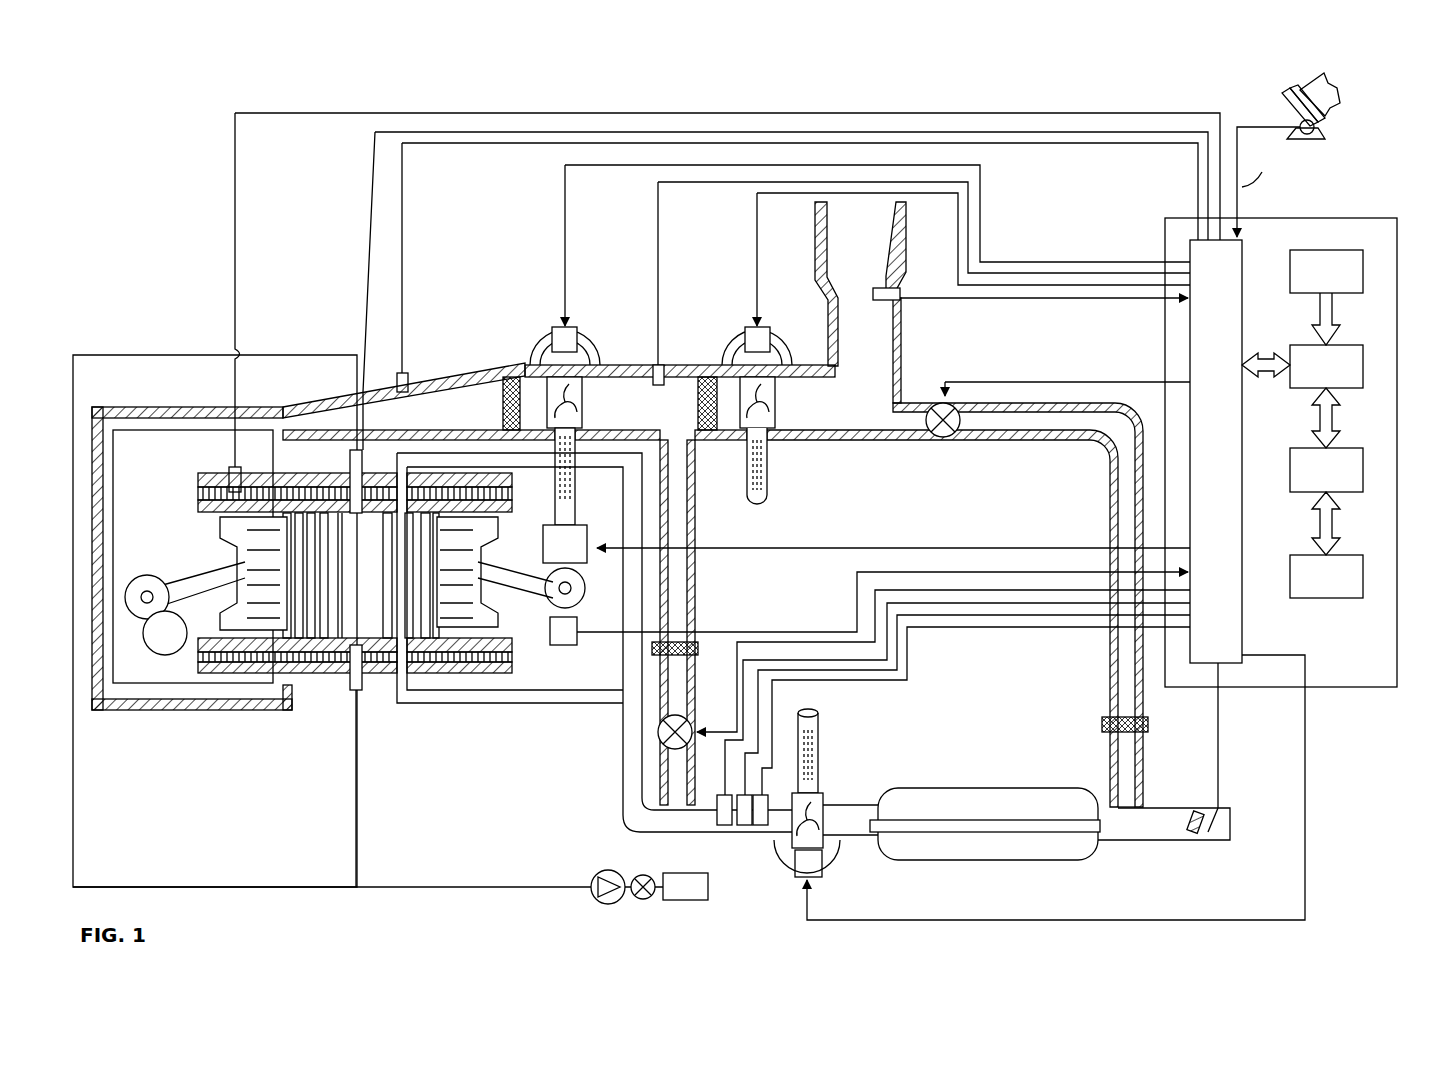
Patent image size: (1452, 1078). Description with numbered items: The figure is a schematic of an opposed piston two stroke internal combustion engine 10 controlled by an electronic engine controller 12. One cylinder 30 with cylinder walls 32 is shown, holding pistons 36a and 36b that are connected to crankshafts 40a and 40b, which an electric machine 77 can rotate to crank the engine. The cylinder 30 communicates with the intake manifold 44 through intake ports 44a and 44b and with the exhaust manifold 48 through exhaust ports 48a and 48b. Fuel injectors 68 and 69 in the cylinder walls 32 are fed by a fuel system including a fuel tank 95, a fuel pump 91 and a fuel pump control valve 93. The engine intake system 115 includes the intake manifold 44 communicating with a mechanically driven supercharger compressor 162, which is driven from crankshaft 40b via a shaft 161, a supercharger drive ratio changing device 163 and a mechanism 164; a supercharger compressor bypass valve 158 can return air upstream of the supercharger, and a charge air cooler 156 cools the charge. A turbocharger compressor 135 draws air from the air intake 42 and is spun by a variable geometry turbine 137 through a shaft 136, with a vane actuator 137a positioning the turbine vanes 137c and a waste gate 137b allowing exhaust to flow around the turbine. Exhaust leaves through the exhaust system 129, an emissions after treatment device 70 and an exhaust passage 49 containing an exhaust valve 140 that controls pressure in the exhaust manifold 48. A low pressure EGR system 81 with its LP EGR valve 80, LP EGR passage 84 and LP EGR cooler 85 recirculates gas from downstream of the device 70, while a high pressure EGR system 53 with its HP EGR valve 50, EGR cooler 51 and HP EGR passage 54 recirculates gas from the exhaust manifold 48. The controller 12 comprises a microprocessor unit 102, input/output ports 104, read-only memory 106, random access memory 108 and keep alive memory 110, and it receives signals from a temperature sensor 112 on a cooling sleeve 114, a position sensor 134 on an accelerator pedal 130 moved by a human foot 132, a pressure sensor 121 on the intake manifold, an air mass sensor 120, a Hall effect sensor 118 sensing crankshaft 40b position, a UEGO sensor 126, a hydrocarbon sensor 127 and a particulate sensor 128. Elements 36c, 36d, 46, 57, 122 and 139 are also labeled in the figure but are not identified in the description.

The opposed piston two stroke internal combustion engine 10 is at (205, 340).
The electronic engine controller 12 is at (1355, 218).
The cylinder 30 is at (345, 592).
The cylinder walls 32 is at (500, 507).
The piston 36a is at (250, 565).
The piston 36b is at (465, 552).
The first sensor 36c is at (345, 490).
The second sensor 36d is at (370, 690).
The crankshaft 40a is at (145, 620).
The crankshaft 40b is at (556, 600).
The air intake 42 is at (860, 284).
The intake manifold 44 is at (463, 536).
The intake port 44a is at (290, 688).
The intake port 44b is at (278, 512).
The intake manifold 46 is at (880, 600).
The exhaust manifold 48 is at (508, 472).
The exhaust port 48a is at (407, 682).
The exhaust port 48b is at (404, 470).
The exhaust passage 49 is at (1222, 802).
The HP EGR valve 50 is at (700, 728).
The EGR cooler 51 is at (698, 650).
The high pressure exhaust gas recirculation system 53 is at (724, 610).
The HP EGR passage 54 is at (693, 535).
The filter 57 is at (705, 376).
The fuel injector 68 is at (362, 458).
The fuel injector 69 is at (349, 708).
The emissions after treatment device 70 is at (925, 861).
The electric machine 77 is at (165, 633).
The LP EGR valve 80 is at (953, 434).
The low pressure exhaust gas recirculation system 81 is at (1032, 356).
The LP EGR passage 84 is at (1113, 672).
The LP EGR cooler 85 is at (1140, 731).
The fuel pump 91 is at (610, 873).
The fuel pump control valve 93 is at (640, 896).
The fuel tank 95 is at (685, 886).
The microprocessor unit 102 is at (1364, 358).
The input/output ports 104 is at (1245, 236).
The read-only memory 106 is at (1364, 265).
The random access memory 108 is at (1364, 462).
The keep alive memory 110 is at (1364, 568).
The temperature sensor 112 is at (229, 470).
The cooling sleeve 114 is at (200, 506).
The engine intake system 115 is at (522, 292).
The Hall effect sensor 118 is at (565, 646).
The air mass sensor 120 is at (898, 294).
The pressure sensor 121 is at (406, 374).
The pressure sensor 122 is at (660, 364).
The universal exhaust gas oxygen sensor 126 is at (722, 812).
The hydrocarbon sensor 127 is at (744, 814).
The particulate sensor 128 is at (762, 814).
The exhaust system 129 is at (587, 790).
The accelerator pedal 130 is at (1285, 100).
The human foot 132 is at (1340, 85).
The position sensor 134 is at (1318, 136).
The turbocharger compressor 135 is at (780, 390).
The shaft 136 is at (768, 494).
The turbocharger variable geometry turbine 137 is at (826, 800).
The vane actuator 137a is at (793, 860).
The waste gate 137b is at (803, 887).
The variable geometry turbine vanes 137c is at (826, 866).
The turbine actuator 139 is at (770, 330).
The exhaust valve 140 is at (1207, 835).
The charge air cooler 156 is at (510, 376).
The supercharger compressor bypass valve 158 is at (578, 330).
The shaft 161 is at (566, 482).
The supercharger compressor 162 is at (578, 382).
The supercharger drive ratio changing device 163 is at (866, 544).
The mechanism 164 is at (574, 584).